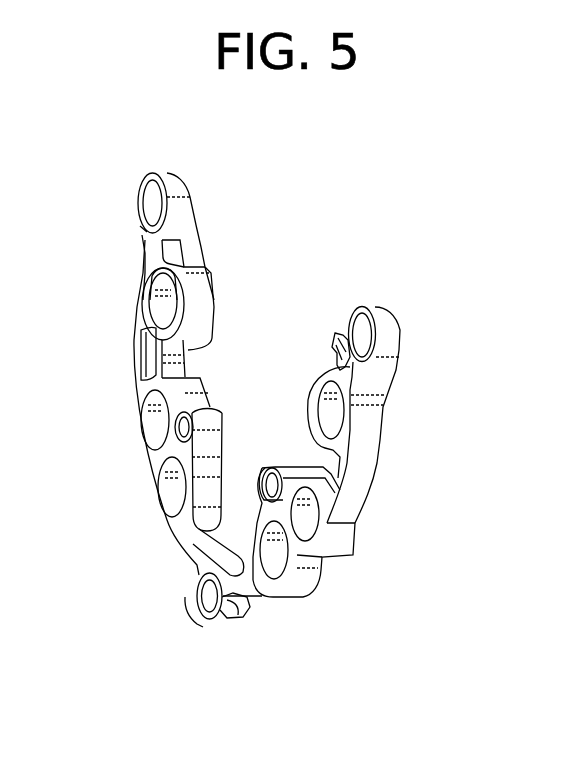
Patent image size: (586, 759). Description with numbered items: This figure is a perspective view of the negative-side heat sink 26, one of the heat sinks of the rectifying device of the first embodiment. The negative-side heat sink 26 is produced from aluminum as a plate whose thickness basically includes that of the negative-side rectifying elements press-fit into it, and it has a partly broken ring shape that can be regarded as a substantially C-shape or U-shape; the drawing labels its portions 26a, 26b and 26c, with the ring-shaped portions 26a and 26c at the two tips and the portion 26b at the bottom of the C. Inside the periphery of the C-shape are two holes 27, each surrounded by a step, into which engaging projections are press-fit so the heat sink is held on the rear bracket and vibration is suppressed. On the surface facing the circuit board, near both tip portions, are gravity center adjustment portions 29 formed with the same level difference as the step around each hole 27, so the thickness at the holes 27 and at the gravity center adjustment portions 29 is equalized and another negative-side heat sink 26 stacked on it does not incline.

The negative-side heat sink 26 is at (180, 556).
The first connecting end portion 26a is at (351, 313).
The second connecting end portion 26b is at (192, 600).
The third connecting end portion 26c is at (138, 168).
The hole 27 is at (175, 426).
The gravity center adjustment portion 29 is at (145, 237).